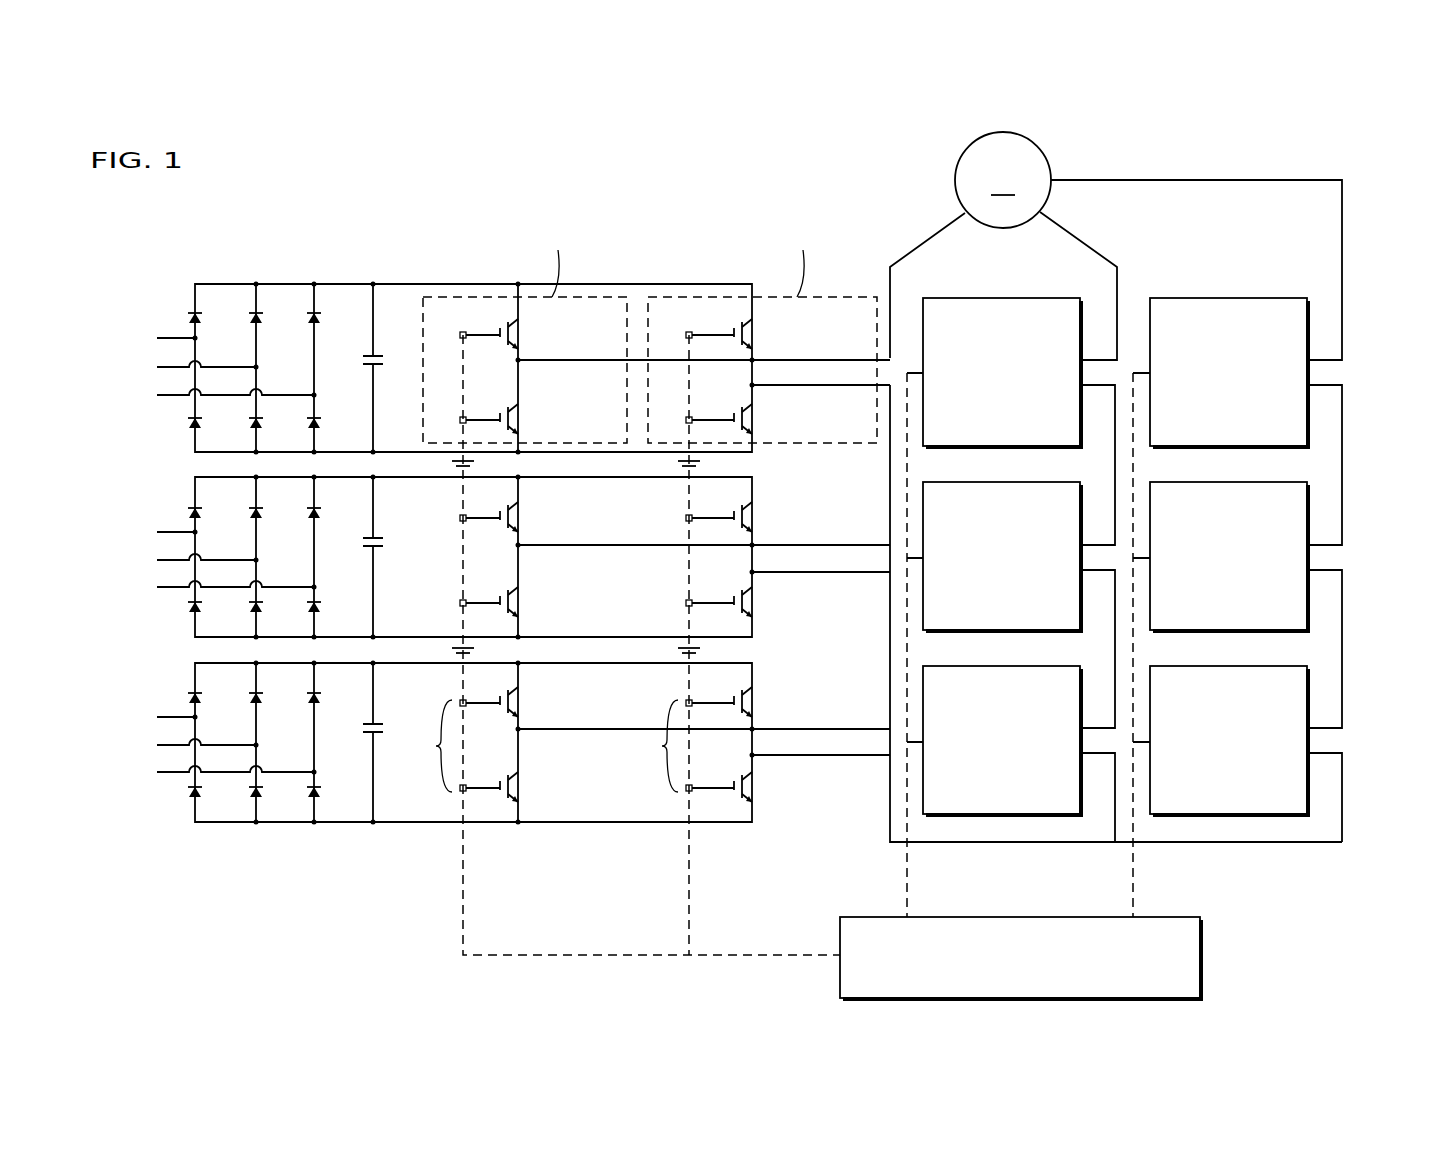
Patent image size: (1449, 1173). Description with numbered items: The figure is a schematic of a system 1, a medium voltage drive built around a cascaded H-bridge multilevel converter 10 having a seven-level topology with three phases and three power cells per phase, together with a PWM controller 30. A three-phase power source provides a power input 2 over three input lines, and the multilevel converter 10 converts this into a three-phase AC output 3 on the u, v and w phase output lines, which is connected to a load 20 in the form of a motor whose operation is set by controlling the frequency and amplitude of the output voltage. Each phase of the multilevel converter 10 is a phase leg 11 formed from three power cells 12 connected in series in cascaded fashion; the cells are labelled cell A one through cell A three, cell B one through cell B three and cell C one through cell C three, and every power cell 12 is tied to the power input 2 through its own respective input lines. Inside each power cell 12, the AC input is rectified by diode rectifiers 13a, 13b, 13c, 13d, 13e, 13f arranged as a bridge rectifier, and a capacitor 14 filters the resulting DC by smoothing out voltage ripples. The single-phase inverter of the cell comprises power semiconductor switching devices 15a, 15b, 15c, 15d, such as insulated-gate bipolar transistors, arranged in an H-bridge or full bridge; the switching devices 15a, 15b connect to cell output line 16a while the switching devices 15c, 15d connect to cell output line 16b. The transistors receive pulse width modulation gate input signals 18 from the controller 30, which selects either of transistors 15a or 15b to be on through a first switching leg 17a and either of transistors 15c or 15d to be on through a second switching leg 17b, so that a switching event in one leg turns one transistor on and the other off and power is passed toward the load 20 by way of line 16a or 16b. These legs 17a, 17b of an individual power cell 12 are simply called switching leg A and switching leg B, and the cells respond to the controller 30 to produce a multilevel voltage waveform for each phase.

The system 1 is at (364, 196).
The power input 2 is at (118, 326).
The output 3 is at (924, 243).
The multilevel converter 10 is at (1362, 435).
The phase leg 11 is at (346, 852).
The power cell 12 is at (1245, 658).
The diode rectifier 13a is at (193, 313).
The diode rectifier 13b is at (254, 313).
The diode rectifier 13c is at (312, 313).
The diode rectifier 13d is at (193, 426).
The diode rectifier 13e is at (254, 430).
The diode rectifier 13f is at (312, 430).
The capacitor 14 is at (370, 360).
The switching device 15a is at (512, 329).
The switching device 15b is at (514, 414).
The switching device 15c is at (746, 329).
The switching device 15d is at (748, 414).
The cell output line 16a is at (806, 360).
The cell output line 16b is at (806, 385).
The first switching leg 17a is at (437, 746).
The second switching leg 17b is at (663, 746).
The gate input signals 18 is at (465, 900).
The load 20 is at (958, 173).
The PWM controller 30 is at (1201, 960).